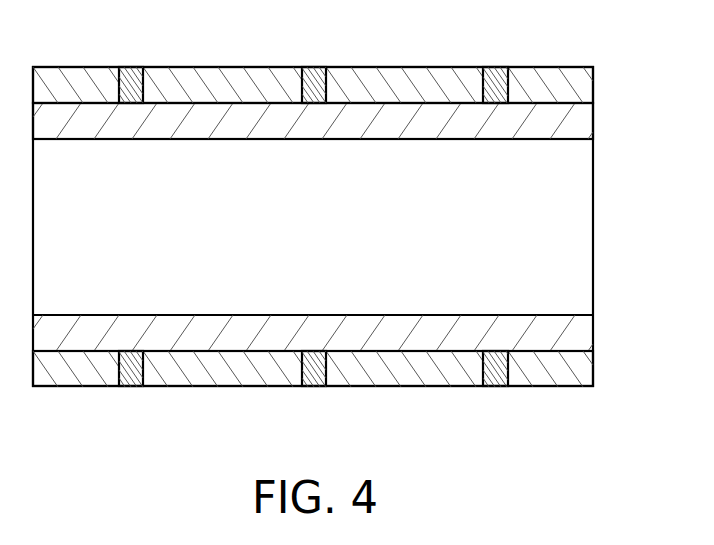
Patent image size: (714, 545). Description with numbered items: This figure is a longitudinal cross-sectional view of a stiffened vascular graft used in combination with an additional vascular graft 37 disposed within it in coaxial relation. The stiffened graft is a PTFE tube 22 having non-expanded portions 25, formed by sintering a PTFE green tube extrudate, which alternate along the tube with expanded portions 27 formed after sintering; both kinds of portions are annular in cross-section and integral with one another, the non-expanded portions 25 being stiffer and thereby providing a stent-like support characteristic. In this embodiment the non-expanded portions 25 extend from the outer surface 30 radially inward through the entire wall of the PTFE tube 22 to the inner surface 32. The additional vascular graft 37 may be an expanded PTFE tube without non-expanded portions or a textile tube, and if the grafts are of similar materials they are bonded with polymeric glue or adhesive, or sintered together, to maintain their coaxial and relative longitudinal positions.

The PTFE tube 22 is at (585, 83).
The non-expanded portions 25 is at (133, 73).
The expanded portions 27 is at (223, 75).
The outer surface 30 is at (82, 387).
The inner surface 32 is at (447, 103).
The additional vascular graft 37 is at (585, 120).